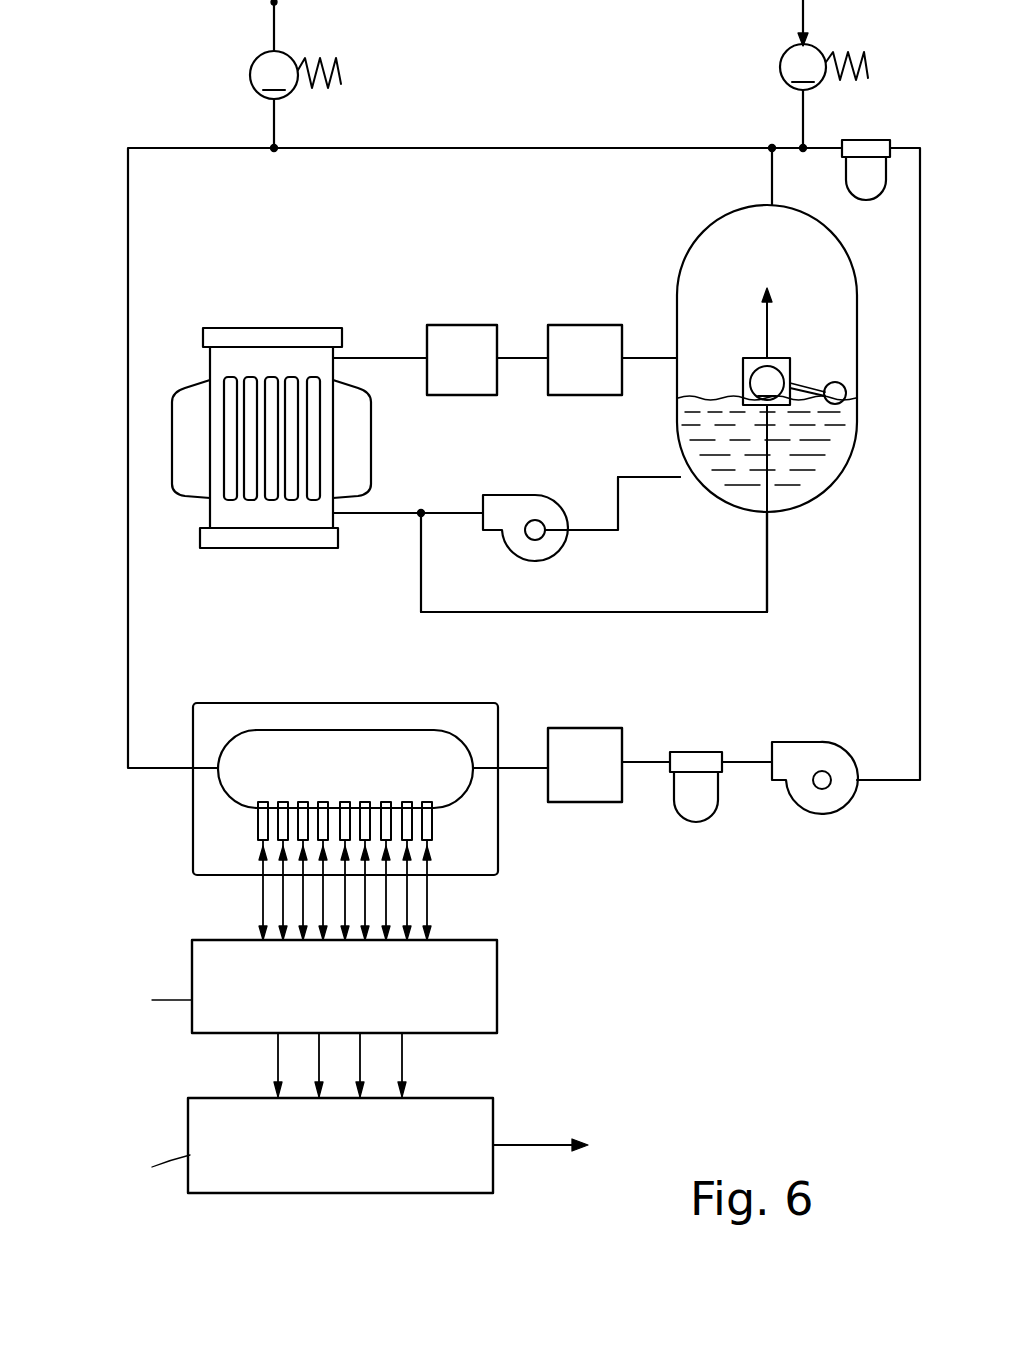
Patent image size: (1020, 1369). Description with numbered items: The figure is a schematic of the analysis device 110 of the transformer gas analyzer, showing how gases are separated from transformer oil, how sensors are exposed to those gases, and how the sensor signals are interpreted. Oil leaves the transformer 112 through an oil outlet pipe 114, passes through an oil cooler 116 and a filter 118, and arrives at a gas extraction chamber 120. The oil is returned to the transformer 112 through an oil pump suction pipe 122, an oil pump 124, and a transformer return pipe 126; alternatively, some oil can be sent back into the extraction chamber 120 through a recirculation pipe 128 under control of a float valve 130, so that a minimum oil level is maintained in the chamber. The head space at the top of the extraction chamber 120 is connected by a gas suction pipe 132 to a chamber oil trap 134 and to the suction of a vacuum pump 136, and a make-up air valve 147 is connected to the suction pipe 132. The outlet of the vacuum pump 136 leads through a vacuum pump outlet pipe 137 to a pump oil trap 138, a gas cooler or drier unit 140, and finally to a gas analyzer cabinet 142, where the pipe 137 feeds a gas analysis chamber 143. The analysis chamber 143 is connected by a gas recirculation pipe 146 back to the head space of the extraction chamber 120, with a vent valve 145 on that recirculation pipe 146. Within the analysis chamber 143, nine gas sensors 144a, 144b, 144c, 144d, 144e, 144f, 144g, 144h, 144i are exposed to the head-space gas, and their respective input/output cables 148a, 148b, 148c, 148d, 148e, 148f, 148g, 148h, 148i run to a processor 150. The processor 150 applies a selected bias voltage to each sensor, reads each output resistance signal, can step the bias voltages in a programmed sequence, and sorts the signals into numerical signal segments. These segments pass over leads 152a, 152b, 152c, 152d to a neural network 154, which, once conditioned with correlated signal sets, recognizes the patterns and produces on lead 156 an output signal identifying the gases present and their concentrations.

The analysis device 110 is at (700, 935).
The transformer 112 is at (243, 328).
The oil outlet pipe 114 is at (378, 356).
The oil cooler 116 is at (485, 377).
The filter 118 is at (607, 377).
The gas extraction chamber 120 is at (690, 248).
The oil pump suction pipe 122 is at (667, 480).
The oil pump 124 is at (526, 502).
The transformer return pipe 126 is at (382, 515).
The recirculation pipe 128 is at (767, 582).
The float valve 130 is at (748, 372).
The gas suction pipe 132 is at (822, 147).
The chamber oil trap 134 is at (872, 185).
The vacuum pump 136 is at (838, 795).
The vacuum pump outlet pipe 137 is at (750, 760).
The pump oil trap 138 is at (697, 756).
The gas cooler or drier unit 140 is at (607, 779).
The gas analyzer cabinet 142 is at (193, 718).
The gas analysis chamber 143 is at (220, 787).
The gas sensor 144a is at (258, 822).
The gas sensor 144b is at (280, 802).
The gas sensor 144c is at (300, 802).
The gas sensor 144d is at (323, 802).
The gas sensor 144e is at (345, 802).
The gas sensor 144f is at (366, 802).
The gas sensor 144g is at (387, 802).
The gas sensor 144h is at (408, 802).
The gas sensor 144i is at (430, 802).
The vent valve 145 is at (250, 72).
The gas recirculation pipe 146 is at (510, 146).
The make-up air valve 147 is at (780, 70).
The input/output cable 148a is at (263, 890).
The input/output cable 148b is at (283, 910).
The input/output cable 148c is at (300, 915).
The input/output cable 148d is at (322, 905).
The input/output cable 148e is at (345, 905).
The input/output cable 148f is at (364, 908).
The input/output cable 148g is at (387, 910).
The input/output cable 148h is at (407, 910).
The input/output cable 148i is at (427, 891).
The processor 150 is at (497, 995).
The lead 152a is at (278, 1053).
The lead 152b is at (319, 1068).
The lead 152c is at (360, 1068).
The lead 152d is at (402, 1050).
The neural network 154 is at (362, 1160).
The output lead 156 is at (548, 1146).